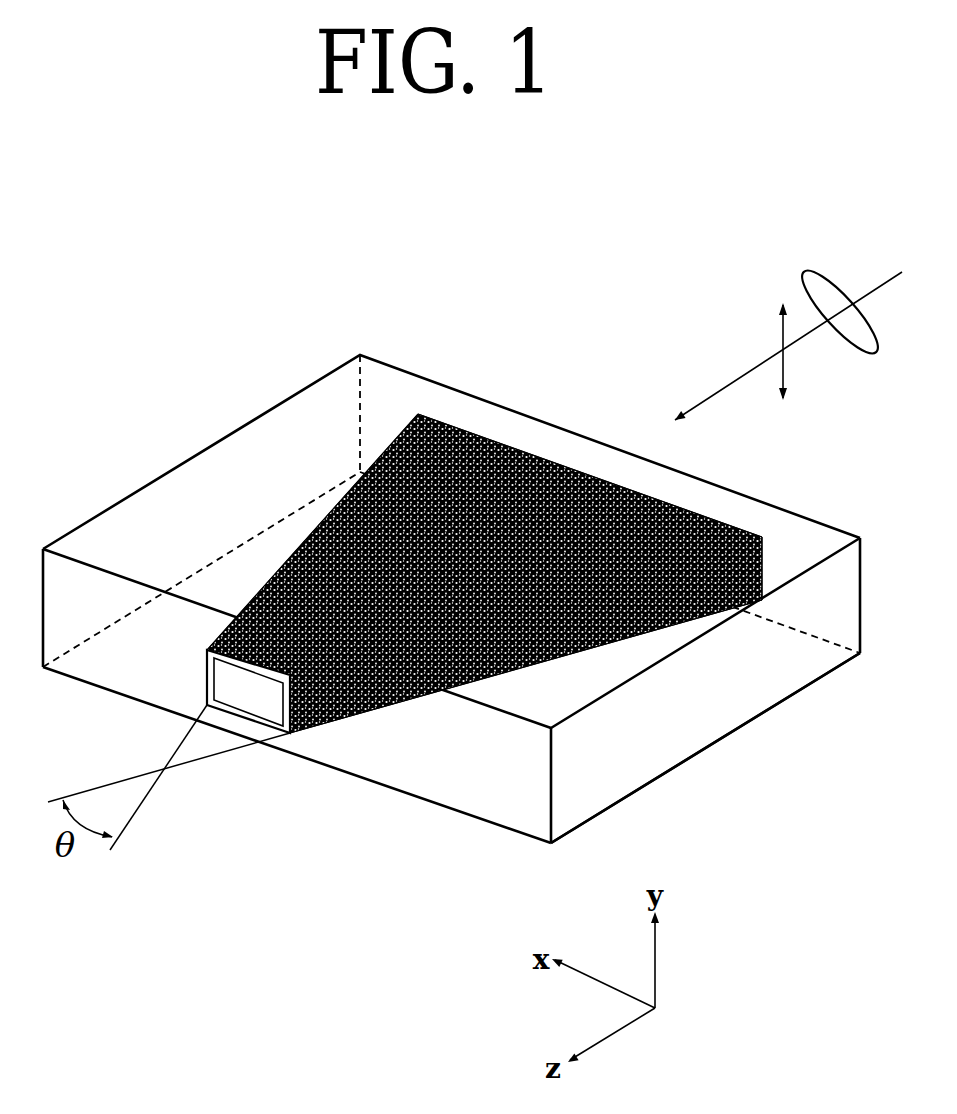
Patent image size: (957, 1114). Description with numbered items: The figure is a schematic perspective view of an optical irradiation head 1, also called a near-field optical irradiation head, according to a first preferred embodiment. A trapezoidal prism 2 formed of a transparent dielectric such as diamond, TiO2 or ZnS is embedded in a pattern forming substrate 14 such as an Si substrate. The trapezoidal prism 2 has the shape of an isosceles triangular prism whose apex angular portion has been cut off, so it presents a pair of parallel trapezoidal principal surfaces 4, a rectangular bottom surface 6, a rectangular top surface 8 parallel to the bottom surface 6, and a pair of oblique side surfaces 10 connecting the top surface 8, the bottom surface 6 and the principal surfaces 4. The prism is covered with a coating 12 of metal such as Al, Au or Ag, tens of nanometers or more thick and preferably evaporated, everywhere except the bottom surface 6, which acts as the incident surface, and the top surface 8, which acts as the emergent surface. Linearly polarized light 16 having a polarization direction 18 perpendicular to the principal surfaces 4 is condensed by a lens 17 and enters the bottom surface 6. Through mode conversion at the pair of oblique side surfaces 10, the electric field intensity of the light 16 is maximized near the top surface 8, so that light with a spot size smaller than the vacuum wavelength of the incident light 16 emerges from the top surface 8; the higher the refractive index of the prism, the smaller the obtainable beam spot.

The optical waveguide device / substrate block 1 is at (278, 395).
The trapezoidal prism 2 is at (540, 445).
The trapezoidal principal surfaces 4 is at (340, 492).
The rectangular bottom surface 6 is at (495, 440).
The rectangular top surface 8 is at (218, 678).
The oblique side surfaces 10 is at (297, 542).
The coating 12 is at (395, 707).
The pattern forming substrate 14 is at (702, 723).
The linearly polarized light 16 is at (720, 391).
The lens 17 is at (832, 281).
The polarization direction 18 is at (785, 365).